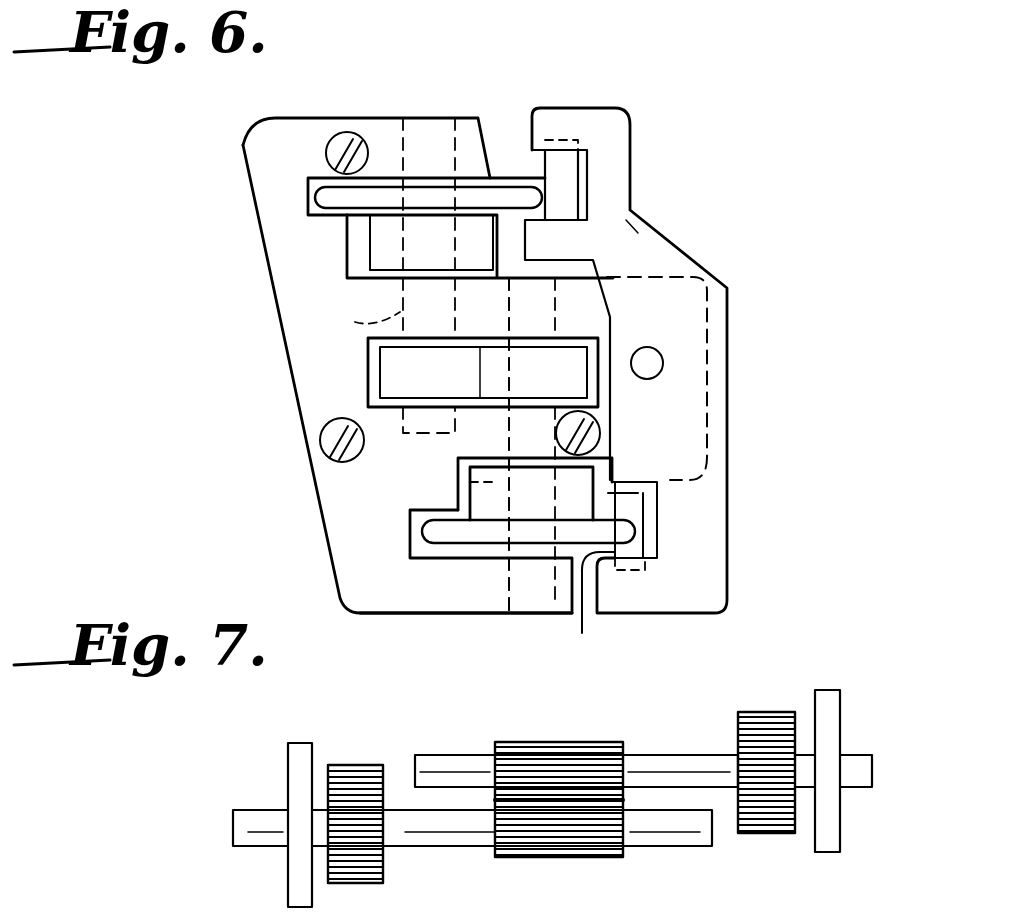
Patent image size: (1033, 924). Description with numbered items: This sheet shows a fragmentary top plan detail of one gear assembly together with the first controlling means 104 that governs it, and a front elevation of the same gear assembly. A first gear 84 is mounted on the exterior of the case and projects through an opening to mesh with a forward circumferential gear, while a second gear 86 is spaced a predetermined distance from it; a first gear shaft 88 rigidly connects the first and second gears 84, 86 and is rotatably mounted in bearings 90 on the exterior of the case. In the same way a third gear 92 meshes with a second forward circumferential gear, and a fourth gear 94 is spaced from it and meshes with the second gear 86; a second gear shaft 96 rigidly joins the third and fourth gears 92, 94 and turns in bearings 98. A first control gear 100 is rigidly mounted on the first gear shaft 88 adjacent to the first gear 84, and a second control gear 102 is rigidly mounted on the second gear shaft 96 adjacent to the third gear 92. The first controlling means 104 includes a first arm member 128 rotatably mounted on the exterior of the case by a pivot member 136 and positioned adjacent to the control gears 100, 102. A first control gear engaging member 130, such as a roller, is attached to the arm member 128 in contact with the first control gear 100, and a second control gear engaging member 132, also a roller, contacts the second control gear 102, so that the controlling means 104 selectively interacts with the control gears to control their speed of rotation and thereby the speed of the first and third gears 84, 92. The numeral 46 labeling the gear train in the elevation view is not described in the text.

In FIG. 7, the gear train 46 is at (603, 740).
In FIG. 6, the first gear 84 is at (458, 474).
In FIG. 7, the first gear 84 is at (356, 770).
In FIG. 6, the second gear 86 is at (572, 357).
In FIG. 7, the second gear 86 is at (553, 846).
In FIG. 6, the first gear shaft 88 is at (514, 578).
In FIG. 7, the first gear shaft 88 is at (440, 841).
In FIG. 6, the bearings 90 is at (371, 597).
In FIG. 6, the third gear 92 is at (384, 240).
In FIG. 7, the third gear 92 is at (786, 700).
In FIG. 6, the fourth gear 94 is at (390, 374).
In FIG. 7, the fourth gear 94 is at (575, 736).
In FIG. 6, the second gear shaft 96 is at (365, 308).
In FIG. 7, the second gear shaft 96 is at (695, 753).
In FIG. 6, the bearings 98 is at (262, 140).
In FIG. 6, the first control gear 100 is at (462, 540).
In FIG. 7, the first control gear 100 is at (293, 768).
In FIG. 6, the second control gear 102 is at (318, 198).
In FIG. 7, the second control gear 102 is at (832, 822).
In FIG. 7, the first controlling means 104 is at (716, 655).
In FIG. 6, the first arm member 128 is at (628, 228).
In FIG. 6, the first control gear engaging member 130 is at (616, 574).
In FIG. 6, the second control gear engaging member 132 is at (550, 163).
In FIG. 6, the pivot member 136 is at (647, 377).